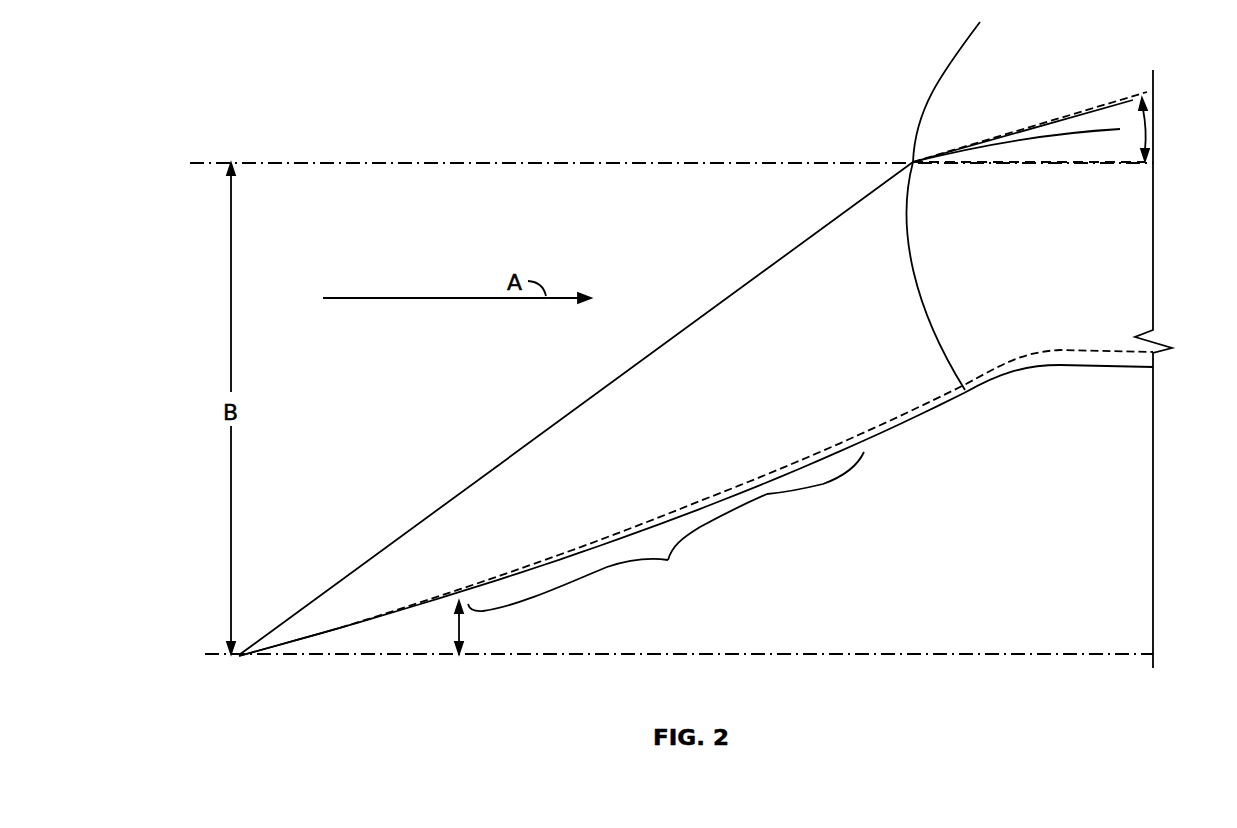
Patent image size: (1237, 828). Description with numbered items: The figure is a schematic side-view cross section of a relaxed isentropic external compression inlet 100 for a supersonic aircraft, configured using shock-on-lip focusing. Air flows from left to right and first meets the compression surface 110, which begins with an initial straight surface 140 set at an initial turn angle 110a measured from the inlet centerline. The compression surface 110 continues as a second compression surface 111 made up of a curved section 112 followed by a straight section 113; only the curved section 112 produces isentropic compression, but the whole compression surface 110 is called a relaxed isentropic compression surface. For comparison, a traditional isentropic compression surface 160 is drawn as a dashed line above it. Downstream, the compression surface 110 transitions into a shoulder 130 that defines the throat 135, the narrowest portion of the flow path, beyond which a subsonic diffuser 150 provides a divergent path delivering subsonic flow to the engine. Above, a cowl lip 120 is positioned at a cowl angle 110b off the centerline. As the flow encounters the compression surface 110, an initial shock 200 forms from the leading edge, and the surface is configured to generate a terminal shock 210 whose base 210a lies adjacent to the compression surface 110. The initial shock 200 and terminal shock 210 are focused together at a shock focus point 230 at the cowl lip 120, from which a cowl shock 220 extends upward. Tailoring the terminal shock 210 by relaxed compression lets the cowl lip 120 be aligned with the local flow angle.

The relaxed isentropic external compression inlet 100 is at (1133, 594).
The compression surface 110 is at (725, 540).
The initial turn angle 110a is at (466, 628).
The cowl angle 110b is at (1147, 122).
The second compression surface 111 is at (767, 494).
The curved section 112 is at (582, 585).
The straight section 113 is at (897, 428).
The cowl lip 120 is at (910, 155).
The shoulder 130 is at (1013, 375).
The throat 135 is at (1001, 259).
The initial straight surface 140 is at (413, 608).
The subsonic diffuser 150 is at (1145, 259).
The traditional isentropic compression surface 160 is at (887, 426).
The initial shock 200 is at (553, 421).
The terminal shock 210 is at (917, 281).
The base of the terminal shock 210a is at (965, 390).
The cowl shock 220 is at (960, 52).
The shock focus point 230 is at (911, 161).